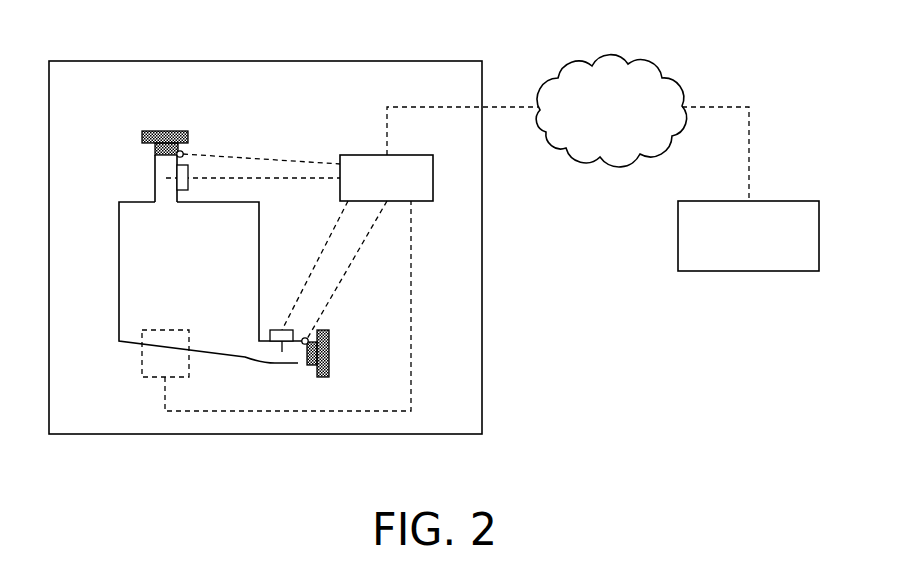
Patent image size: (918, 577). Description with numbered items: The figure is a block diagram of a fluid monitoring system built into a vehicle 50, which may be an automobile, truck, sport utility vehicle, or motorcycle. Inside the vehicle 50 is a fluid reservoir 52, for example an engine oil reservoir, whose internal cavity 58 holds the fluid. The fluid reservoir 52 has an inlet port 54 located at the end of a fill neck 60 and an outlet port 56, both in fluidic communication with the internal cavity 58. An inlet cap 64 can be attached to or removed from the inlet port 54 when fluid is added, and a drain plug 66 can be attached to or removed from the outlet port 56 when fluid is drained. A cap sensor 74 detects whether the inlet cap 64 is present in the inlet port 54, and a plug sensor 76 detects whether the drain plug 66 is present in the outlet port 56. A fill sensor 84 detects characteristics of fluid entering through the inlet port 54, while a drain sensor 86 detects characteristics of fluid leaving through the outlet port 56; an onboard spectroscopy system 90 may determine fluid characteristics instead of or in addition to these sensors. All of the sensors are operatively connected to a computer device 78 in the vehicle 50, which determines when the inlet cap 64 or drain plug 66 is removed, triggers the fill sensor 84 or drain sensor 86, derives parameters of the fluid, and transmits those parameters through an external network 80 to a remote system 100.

The vehicle 50 is at (305, 60).
The fluid reservoir 52 is at (118, 253).
The inlet port 54 is at (156, 162).
The outlet port 56 is at (300, 362).
The internal cavity 58 is at (135, 277).
The fill neck 60 is at (155, 188).
The inlet cap 64 is at (175, 131).
The drain plug 66 is at (329, 363).
The cap sensor 74 is at (184, 152).
The plug sensor 76 is at (320, 331).
The computer device 78 is at (433, 201).
The network 80 is at (645, 62).
The fill sensor 84 is at (189, 190).
The drain sensor 86 is at (278, 330).
The onboard spectroscopy system 90 is at (142, 355).
The remote system 100 is at (797, 201).